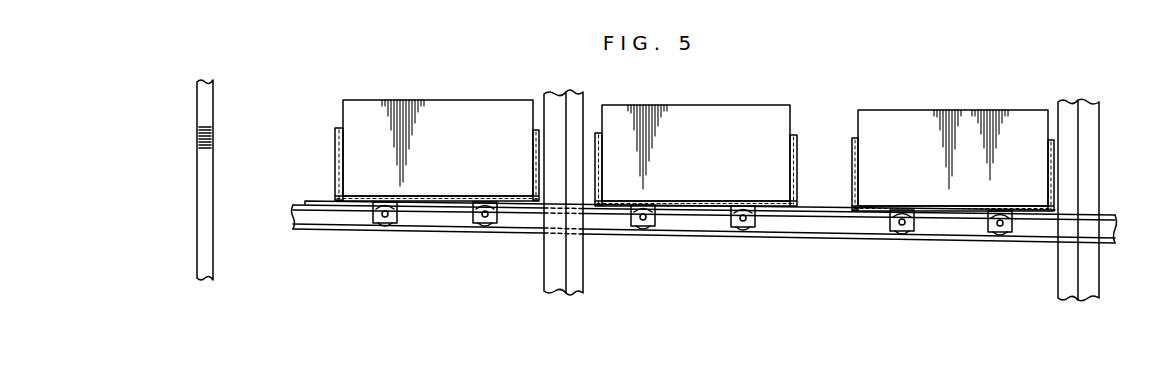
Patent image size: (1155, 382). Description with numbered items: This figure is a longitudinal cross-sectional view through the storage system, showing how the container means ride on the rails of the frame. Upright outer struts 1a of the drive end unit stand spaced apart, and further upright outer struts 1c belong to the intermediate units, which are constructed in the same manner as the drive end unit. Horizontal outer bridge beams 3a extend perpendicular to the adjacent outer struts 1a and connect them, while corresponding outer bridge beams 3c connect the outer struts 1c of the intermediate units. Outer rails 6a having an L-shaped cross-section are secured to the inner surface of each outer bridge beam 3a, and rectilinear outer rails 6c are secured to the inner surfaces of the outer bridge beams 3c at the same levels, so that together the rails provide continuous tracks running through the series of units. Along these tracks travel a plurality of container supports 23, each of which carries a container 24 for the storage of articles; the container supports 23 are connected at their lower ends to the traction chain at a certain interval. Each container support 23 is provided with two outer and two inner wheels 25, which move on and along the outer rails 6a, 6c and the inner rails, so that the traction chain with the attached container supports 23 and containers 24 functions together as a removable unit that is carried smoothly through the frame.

The outer struts 1a is at (213, 95).
The outer struts 1c is at (583, 94).
The outer bridge beams 3a is at (322, 205).
The outer bridge beams 3c is at (820, 210).
The outer rails 6a is at (350, 230).
The outer rails 6c is at (804, 240).
The container supports 23 is at (335, 140).
The container 24 is at (446, 100).
The wheels 25 is at (397, 226).